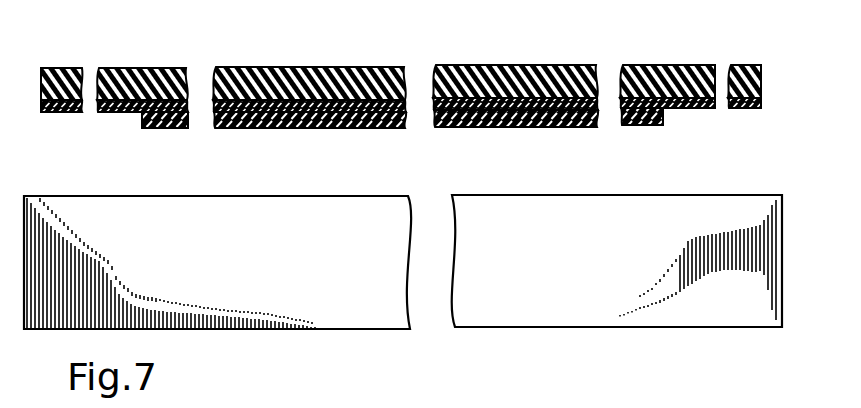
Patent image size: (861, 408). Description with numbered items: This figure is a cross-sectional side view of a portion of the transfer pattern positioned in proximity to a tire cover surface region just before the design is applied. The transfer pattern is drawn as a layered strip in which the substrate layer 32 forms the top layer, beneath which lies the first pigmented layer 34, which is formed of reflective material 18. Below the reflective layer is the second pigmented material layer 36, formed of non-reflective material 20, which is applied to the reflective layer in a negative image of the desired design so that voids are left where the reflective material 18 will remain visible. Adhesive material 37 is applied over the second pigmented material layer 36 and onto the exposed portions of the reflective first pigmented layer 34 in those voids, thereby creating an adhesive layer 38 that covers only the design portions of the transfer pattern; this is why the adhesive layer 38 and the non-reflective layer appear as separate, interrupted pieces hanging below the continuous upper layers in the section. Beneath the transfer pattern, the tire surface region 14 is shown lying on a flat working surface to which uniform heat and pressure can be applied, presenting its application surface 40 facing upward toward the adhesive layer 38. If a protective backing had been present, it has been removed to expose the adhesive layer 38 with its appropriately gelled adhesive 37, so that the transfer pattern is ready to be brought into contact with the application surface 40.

The tire surface region 14 is at (706, 195).
The reflective material 18 is at (618, 102).
The non-reflective material 20 is at (427, 112).
The substrate layer 32 is at (763, 75).
The first pigmented layer 34 is at (763, 105).
The second pigmented material layer 36 is at (665, 113).
The adhesive material 37 is at (308, 127).
The adhesive layer 38 is at (139, 127).
The application surface 40 is at (600, 196).